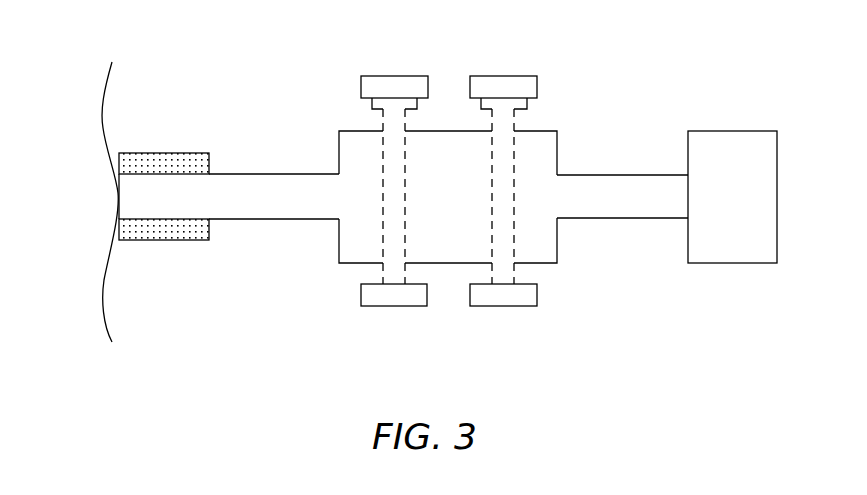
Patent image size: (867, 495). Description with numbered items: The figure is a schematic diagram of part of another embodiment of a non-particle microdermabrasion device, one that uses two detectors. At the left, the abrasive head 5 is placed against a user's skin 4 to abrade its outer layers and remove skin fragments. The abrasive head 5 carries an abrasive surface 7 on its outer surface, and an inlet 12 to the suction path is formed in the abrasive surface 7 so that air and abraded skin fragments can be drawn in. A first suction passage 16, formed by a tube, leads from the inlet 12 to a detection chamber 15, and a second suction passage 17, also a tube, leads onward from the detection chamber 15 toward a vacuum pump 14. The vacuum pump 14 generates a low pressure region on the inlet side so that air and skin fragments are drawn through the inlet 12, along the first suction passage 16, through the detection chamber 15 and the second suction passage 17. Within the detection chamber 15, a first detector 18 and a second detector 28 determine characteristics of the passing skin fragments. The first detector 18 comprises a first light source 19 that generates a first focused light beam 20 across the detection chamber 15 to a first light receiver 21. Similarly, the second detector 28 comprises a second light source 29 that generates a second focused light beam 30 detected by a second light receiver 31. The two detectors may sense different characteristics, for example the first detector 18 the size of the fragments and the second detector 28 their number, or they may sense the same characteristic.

The skin 4 is at (102, 122).
The abrasive head 5 is at (170, 160).
The abrasive surface 7 is at (119, 227).
The inlet 12 is at (119, 193).
The vacuum pump 14 is at (735, 138).
The detection chamber 15 is at (545, 150).
The first suction passage 16 is at (270, 188).
The second suction passage 17 is at (628, 183).
The first detector 18 is at (375, 82).
The first light source 19 is at (410, 82).
The first light beam 20 is at (395, 205).
The first light receiver 21 is at (392, 295).
The second detector 28 is at (488, 82).
The second light source 29 is at (523, 82).
The second light beam 30 is at (507, 215).
The second light receiver 31 is at (498, 295).